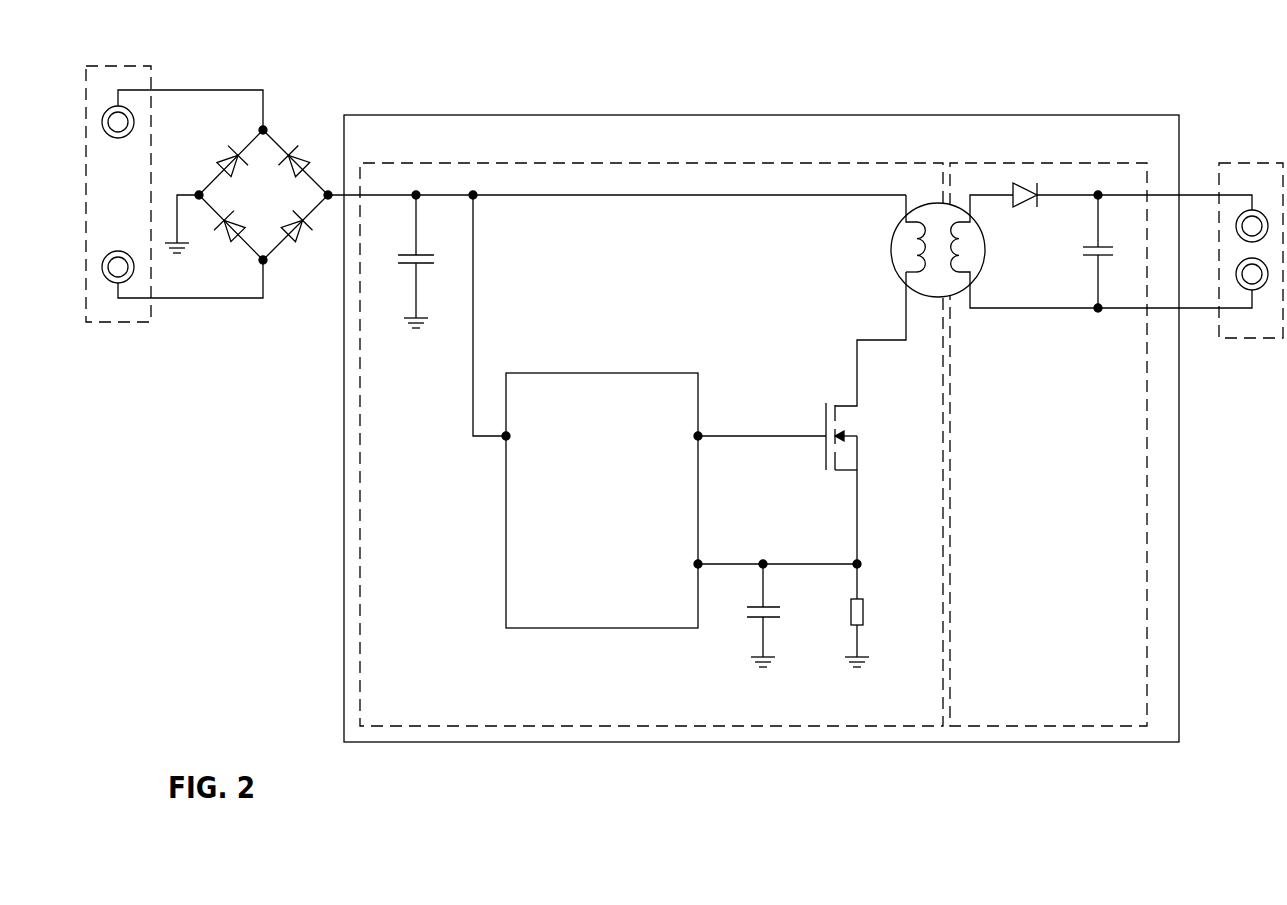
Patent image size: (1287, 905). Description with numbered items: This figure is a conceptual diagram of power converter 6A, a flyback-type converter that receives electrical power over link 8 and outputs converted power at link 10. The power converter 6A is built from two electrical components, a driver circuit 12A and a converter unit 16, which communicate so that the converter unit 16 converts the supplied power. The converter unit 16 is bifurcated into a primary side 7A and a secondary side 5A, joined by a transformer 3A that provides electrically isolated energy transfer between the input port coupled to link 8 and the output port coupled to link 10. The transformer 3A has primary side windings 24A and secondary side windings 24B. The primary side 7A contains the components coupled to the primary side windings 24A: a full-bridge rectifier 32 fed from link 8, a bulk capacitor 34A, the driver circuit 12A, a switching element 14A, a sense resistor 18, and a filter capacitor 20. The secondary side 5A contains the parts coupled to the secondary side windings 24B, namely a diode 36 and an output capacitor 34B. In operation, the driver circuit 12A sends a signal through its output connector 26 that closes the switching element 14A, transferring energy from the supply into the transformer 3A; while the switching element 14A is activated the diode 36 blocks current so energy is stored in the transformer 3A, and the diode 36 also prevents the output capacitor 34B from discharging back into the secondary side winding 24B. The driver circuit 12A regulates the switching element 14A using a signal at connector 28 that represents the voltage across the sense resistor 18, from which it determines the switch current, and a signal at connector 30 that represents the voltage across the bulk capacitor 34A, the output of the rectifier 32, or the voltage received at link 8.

The link 8 is at (131, 306).
The full-bridge rectifier 32 is at (301, 122).
The power converter 6A is at (761, 400).
The converter unit 16 is at (870, 145).
The primary side 7A is at (745, 716).
The secondary side 5A is at (1090, 716).
The bulk capacitor 34A is at (402, 261).
The connector 30 is at (491, 335).
The driver circuit 12A is at (623, 523).
The output connector 26 is at (760, 454).
The connector 28 is at (777, 545).
The switching element 14A is at (856, 418).
The sense resistor 18 is at (881, 615).
The filter capacitor 20 is at (751, 615).
The transformer 3A is at (963, 251).
The primary side windings 24A is at (876, 235).
The secondary side windings 24B is at (1024, 251).
The diode 36 is at (1055, 217).
The output capacitor 34B is at (1081, 251).
The link 10 is at (1250, 327).